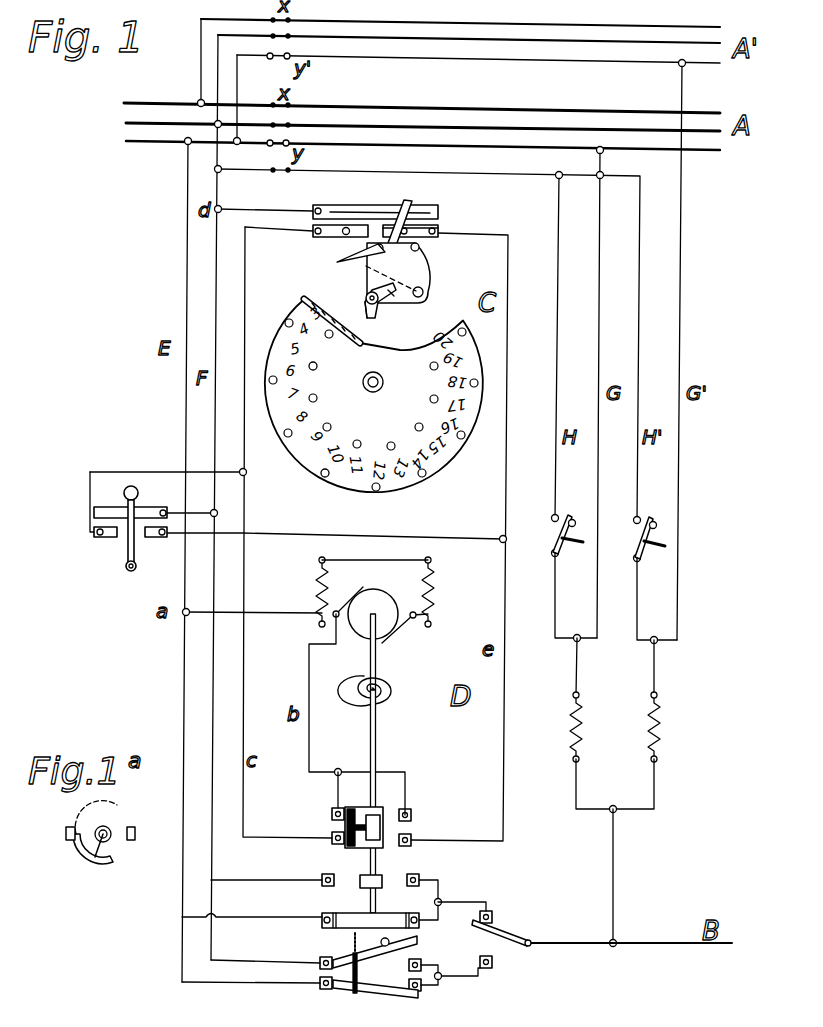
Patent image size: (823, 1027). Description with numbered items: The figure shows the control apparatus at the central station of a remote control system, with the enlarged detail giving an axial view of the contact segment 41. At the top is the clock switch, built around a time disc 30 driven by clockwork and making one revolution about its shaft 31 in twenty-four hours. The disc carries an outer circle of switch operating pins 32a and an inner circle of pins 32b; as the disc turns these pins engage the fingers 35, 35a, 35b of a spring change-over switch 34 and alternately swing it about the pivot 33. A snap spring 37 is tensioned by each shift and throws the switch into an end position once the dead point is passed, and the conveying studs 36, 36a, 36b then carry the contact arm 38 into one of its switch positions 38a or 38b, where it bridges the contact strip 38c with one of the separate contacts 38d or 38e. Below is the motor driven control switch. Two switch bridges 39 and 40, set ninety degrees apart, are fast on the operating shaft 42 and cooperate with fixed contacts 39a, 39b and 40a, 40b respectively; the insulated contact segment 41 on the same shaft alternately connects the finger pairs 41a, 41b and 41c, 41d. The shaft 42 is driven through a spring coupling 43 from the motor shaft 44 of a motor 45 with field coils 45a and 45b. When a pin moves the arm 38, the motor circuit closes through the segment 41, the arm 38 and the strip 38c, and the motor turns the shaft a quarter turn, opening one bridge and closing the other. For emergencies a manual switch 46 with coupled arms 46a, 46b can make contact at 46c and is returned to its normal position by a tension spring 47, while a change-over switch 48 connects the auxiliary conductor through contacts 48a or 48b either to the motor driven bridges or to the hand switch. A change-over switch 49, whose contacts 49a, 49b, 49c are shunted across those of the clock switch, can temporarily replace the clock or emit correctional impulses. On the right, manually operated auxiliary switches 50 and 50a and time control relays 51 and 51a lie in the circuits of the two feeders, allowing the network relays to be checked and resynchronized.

In FIG. 1, the time disc 30 is at (444, 468).
In FIG. 1, the shaft 31 is at (384, 382).
In FIG. 1, the outer switch operating pins 32a is at (322, 477).
In FIG. 1, the inner switch operating pins 32b is at (318, 366).
In FIG. 1, the pivot 33 is at (365, 298).
In FIG. 1, the spring change-over switch 34 is at (430, 300).
In FIG. 1, the pawl 35 is at (388, 305).
In FIG. 1, the finger 35a is at (399, 309).
In FIG. 1, the finger 35b is at (364, 308).
In FIG. 1, the plate pin 36 is at (440, 239).
In FIG. 1, the conveying stud 36a is at (374, 248).
In FIG. 1, the conveying stud 36b is at (424, 290).
In FIG. 1, the snap spring 37 is at (340, 266).
In FIG. 1, the contact arm 38 is at (406, 201).
In FIG. 1, the switch position 38a is at (422, 204).
In FIG. 1, the switch position 38b is at (375, 200).
In FIG. 1, the contact strip 38c is at (366, 214).
In FIG. 1, the separate contact 38d is at (316, 238).
In FIG. 1, the separate contact 38e is at (438, 238).
In FIG. 1, the switch bridge 39 is at (382, 877).
In FIG. 1, the fixed contact 39a is at (334, 878).
In FIG. 1, the fixed contact 39b is at (420, 878).
In FIG. 1, the switch bridge 40 is at (385, 915).
In FIG. 1, the fixed contact 40a is at (326, 928).
In FIG. 1, the fixed contact 40b is at (418, 928).
In FIG. 1, the insulated contact segment 41 is at (360, 808).
In FIG. 1A, the insulated contact segment 41 is at (93, 862).
In FIG. 1, the contact finger 41a is at (331, 812).
In FIG. 1A, the contact finger 41a is at (66, 835).
In FIG. 1, the contact finger 41b is at (331, 836).
In FIG. 1, the contact finger 41c is at (412, 814).
In FIG. 1A, the contact finger 41c is at (135, 835).
In FIG. 1, the contact finger 41d is at (412, 840).
In FIG. 1, the operating shaft 42 is at (377, 757).
In FIG. 1A, the operating shaft 42 is at (108, 829).
In FIG. 1, the spring coupling 43 is at (388, 690).
In FIG. 1, the motor shaft 44 is at (378, 665).
In FIG. 1, the motor 45 is at (380, 603).
In FIG. 1, the field coil 45a is at (316, 586).
In FIG. 1, the field coil 45b is at (434, 586).
In FIG. 1, the manual switch 46 is at (436, 997).
In FIG. 1, the switch arm 46a is at (368, 993).
In FIG. 1, the switch arm 46b is at (338, 950).
In FIG. 1, the contact 46c is at (422, 963).
In FIG. 1, the tension spring 47 is at (357, 955).
In FIG. 1, the change-over switch 48 is at (501, 935).
In FIG. 1, the contact 48a is at (494, 914).
In FIG. 1, the contact 48b is at (493, 966).
In FIG. 1, the change-over switch 49 is at (125, 546).
In FIG. 1, the contact 49a is at (110, 508).
In FIG. 1, the contact 49b is at (96, 540).
In FIG. 1, the contact 49c is at (150, 540).
In FIG. 1, the manually operated auxiliary switch 50 is at (554, 536).
In FIG. 1, the manually operated auxiliary switch 50a is at (637, 539).
In FIG. 1, the time control relay 51 is at (562, 727).
In FIG. 1, the time control relay 51a is at (640, 727).